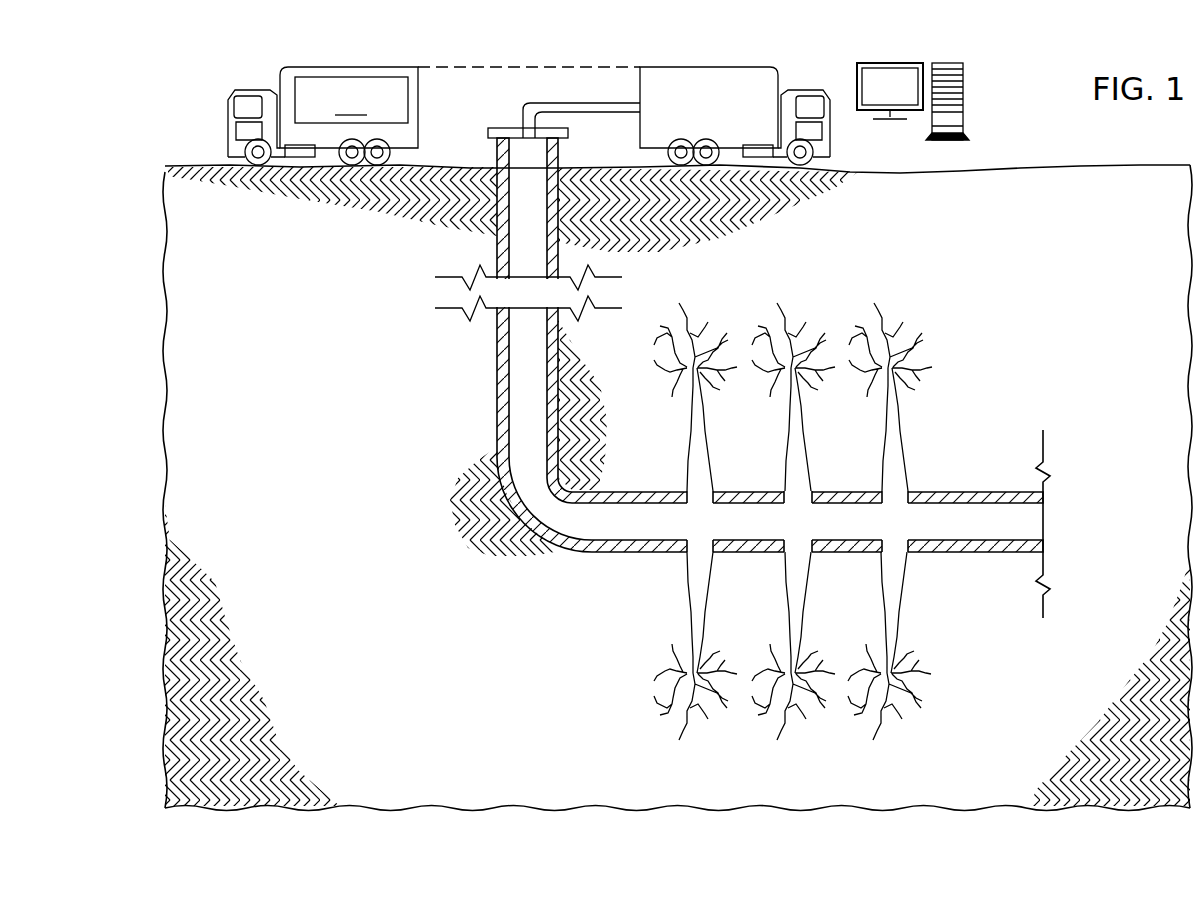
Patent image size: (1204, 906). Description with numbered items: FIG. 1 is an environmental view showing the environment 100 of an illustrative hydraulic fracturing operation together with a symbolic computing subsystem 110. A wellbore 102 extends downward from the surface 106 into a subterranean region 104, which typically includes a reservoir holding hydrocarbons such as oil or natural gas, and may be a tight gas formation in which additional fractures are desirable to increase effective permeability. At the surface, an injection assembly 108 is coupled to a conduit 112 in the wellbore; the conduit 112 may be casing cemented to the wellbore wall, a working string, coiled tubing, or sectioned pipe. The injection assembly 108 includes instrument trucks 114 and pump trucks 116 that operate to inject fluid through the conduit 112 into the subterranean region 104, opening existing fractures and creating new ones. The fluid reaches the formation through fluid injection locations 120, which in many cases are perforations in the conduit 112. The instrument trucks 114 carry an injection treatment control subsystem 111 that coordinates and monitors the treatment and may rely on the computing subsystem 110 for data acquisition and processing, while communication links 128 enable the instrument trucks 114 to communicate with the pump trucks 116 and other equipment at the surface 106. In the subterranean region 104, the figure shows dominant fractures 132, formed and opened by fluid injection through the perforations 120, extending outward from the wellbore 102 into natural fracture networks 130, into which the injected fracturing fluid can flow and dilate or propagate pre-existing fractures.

The environment 100 is at (378, 598).
The wellbore 102 is at (815, 524).
The subterranean region 104 is at (681, 248).
The surface 106 is at (998, 170).
The injection assembly 108 is at (493, 92).
The computing subsystem 110 is at (932, 52).
The injection treatment control subsystem 111 is at (351, 104).
The conduit 112 is at (497, 395).
The instrument trucks 114 is at (323, 92).
The pump trucks 116 is at (704, 66).
The fluid injection locations 120 is at (901, 487).
The communication links 128 is at (520, 66).
The natural fracture networks 130 is at (812, 505).
The dominant fractures 132 is at (898, 415).